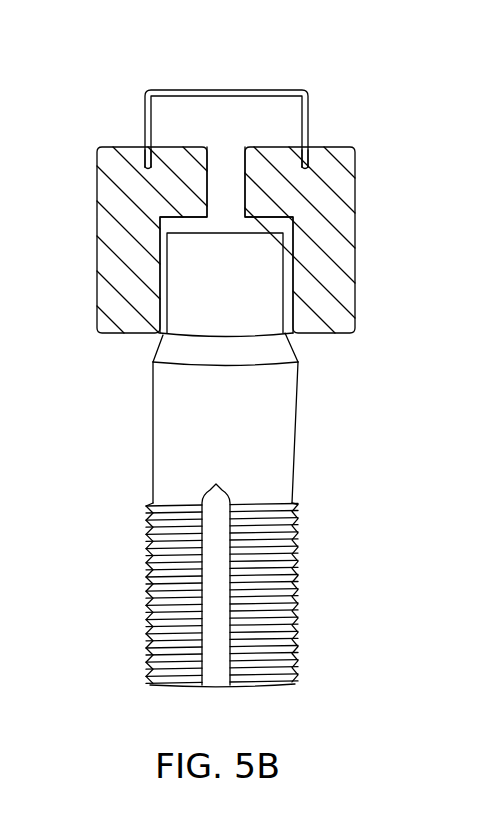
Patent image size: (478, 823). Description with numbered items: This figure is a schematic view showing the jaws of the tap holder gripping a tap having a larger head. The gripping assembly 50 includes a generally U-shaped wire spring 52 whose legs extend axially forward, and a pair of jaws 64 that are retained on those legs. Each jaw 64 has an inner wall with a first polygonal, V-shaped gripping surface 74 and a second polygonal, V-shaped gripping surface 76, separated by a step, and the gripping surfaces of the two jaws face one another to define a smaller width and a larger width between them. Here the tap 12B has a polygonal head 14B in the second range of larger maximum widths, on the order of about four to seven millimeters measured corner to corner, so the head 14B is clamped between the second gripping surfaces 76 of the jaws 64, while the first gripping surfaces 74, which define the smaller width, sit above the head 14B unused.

The gripping assembly 50 is at (393, 166).
The wire spring 52 is at (230, 89).
The first gripping surface 74 is at (212, 157).
The jaws 64 is at (108, 272).
The polygonal head 14B is at (240, 231).
The second gripping surface 76 is at (161, 259).
The tap 12B is at (278, 442).